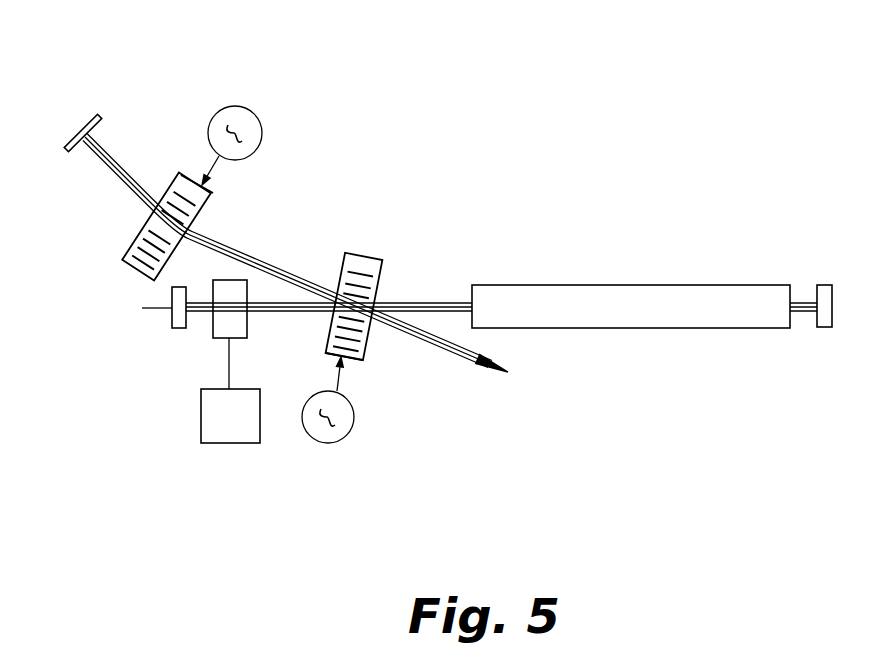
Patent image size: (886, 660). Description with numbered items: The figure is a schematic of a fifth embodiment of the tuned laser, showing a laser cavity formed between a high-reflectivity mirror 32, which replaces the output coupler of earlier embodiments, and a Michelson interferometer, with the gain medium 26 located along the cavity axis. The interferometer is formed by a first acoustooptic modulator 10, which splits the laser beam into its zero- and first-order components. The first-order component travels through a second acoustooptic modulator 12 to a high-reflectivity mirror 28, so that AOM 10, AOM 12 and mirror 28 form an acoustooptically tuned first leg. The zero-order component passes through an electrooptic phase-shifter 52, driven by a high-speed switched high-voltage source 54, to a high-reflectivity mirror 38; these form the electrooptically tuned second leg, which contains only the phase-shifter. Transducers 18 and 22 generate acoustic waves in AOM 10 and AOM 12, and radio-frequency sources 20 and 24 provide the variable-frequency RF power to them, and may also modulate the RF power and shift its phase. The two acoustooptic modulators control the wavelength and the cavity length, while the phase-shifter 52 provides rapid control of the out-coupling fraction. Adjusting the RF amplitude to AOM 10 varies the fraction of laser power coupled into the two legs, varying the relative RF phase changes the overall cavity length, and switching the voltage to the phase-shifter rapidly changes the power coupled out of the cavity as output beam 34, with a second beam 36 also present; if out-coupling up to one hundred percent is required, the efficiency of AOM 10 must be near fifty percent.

The acoustooptic modulator 10 is at (388, 271).
The acoustooptic modulator 12 is at (162, 188).
The transducer 18 is at (357, 371).
The radio-frequency source 20 is at (353, 421).
The transducer 22 is at (213, 181).
The radio-frequency source 24 is at (258, 121).
The gain medium 26 is at (547, 276).
The high-reflectivity mirror 28 is at (98, 119).
The high-reflectivity mirror 32 is at (825, 329).
The output beam 34 is at (446, 351).
The output beam 36 is at (277, 313).
The high-reflectivity mirror 38 is at (143, 328).
The electrooptic phase-shifter 52 is at (235, 272).
The high-speed switched high-voltage source 54 is at (230, 445).